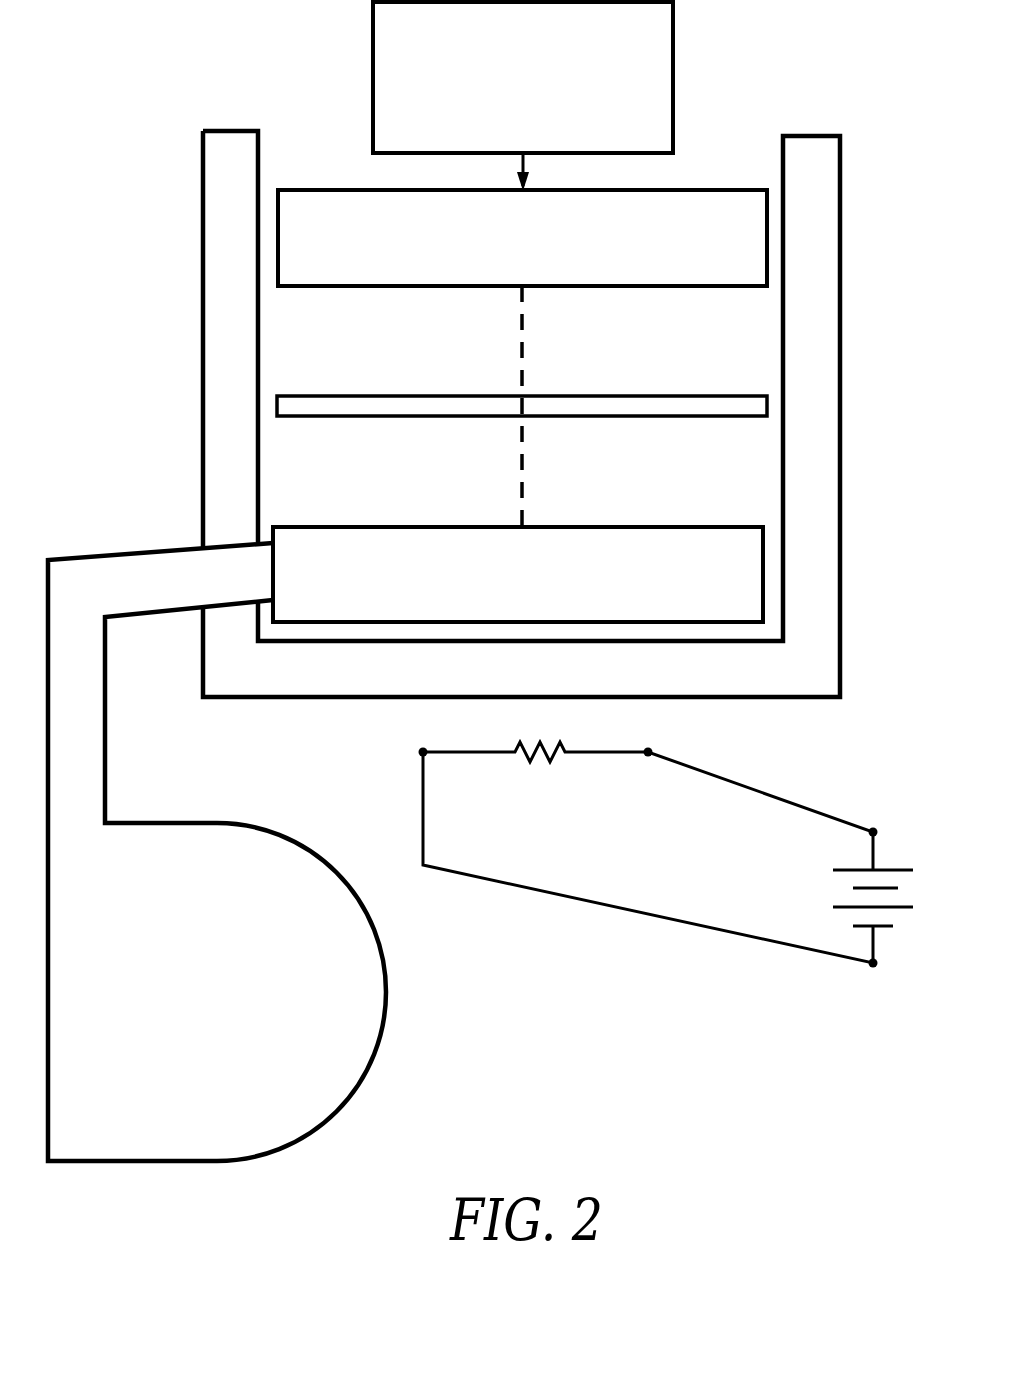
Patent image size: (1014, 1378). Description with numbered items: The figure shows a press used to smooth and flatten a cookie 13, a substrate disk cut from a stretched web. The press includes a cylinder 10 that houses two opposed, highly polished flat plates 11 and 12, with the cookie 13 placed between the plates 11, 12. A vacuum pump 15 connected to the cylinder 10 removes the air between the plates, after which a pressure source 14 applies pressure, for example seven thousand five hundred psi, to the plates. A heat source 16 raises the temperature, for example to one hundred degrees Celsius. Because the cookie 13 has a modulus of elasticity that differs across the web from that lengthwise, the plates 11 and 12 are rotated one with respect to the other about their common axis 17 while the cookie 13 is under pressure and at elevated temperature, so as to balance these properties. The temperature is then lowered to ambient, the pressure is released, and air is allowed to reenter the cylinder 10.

The cylinder 10 is at (800, 186).
The flat plate 11 is at (691, 243).
The flat plate 12 is at (690, 591).
The cookie 13 is at (663, 396).
The pressure source 14 is at (632, 49).
The vacuum pump 15 is at (176, 923).
The heat source 16 is at (532, 854).
The axis 17 is at (522, 375).